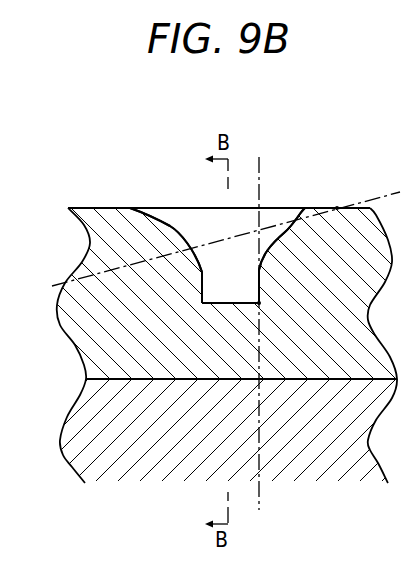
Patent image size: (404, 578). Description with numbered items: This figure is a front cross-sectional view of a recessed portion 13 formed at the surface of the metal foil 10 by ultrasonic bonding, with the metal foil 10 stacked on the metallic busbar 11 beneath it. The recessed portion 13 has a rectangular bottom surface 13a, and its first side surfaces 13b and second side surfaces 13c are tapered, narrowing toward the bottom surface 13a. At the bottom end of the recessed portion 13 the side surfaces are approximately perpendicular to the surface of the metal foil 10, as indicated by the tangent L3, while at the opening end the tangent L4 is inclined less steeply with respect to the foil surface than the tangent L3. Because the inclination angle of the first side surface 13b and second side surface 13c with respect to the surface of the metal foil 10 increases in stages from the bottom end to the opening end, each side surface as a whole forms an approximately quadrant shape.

The metal foil 10 is at (90, 241).
The busbar 11 is at (107, 403).
The recessed portion 13 is at (271, 198).
The bottom surface 13a is at (223, 300).
The first side surface 13b is at (166, 208).
The second side surface 13c is at (167, 222).
The tangent at bottom end L3 is at (261, 348).
The tangent at opening end L4 is at (214, 247).